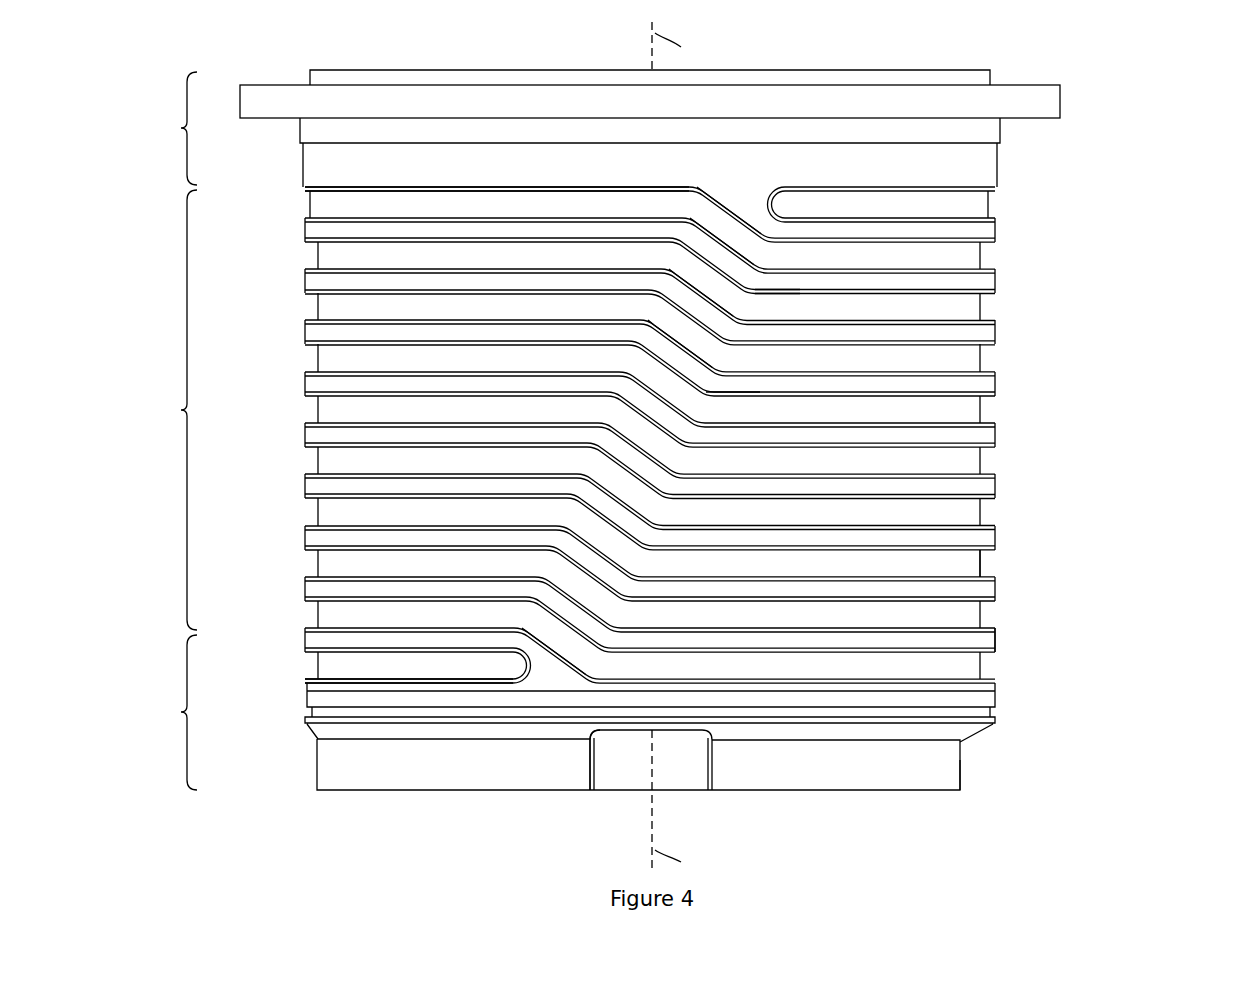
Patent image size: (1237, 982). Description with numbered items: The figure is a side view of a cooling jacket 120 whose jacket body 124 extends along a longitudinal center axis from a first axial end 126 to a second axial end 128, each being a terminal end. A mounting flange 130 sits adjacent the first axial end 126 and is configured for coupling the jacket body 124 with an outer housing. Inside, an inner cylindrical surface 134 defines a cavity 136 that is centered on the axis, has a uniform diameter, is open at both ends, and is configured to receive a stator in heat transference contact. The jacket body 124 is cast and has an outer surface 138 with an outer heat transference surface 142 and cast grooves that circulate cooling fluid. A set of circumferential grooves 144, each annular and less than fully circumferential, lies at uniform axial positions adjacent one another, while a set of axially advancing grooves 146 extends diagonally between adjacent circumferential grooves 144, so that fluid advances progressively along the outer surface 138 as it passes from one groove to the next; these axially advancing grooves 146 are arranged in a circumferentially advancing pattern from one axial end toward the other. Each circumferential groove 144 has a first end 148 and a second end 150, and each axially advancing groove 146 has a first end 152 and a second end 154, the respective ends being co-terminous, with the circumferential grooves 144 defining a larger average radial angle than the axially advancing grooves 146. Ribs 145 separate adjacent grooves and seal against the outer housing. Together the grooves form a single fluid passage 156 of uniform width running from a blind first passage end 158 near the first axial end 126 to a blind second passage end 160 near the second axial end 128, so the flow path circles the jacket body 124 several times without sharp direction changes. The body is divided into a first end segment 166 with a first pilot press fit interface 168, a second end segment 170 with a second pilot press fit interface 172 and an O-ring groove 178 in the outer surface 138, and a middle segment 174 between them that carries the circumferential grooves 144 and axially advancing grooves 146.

The cooling jacket 120 is at (1181, 222).
The jacket body 124 is at (790, 782).
The first axial end 126 is at (982, 70).
The second axial end 128 is at (930, 793).
The mounting flange 130 is at (1062, 102).
The inner cylindrical surface 134 is at (695, 773).
The cavity 136 is at (604, 741).
The outer surface 138 is at (990, 622).
The outer heat transference surface 142 is at (985, 560).
The circumferential grooves 144 is at (302, 206).
The ribs 145 is at (998, 292).
The axially advancing grooves 146 is at (739, 222).
The first end 148 is at (667, 309).
The second end 150 is at (758, 306).
The first end 152 is at (664, 343).
The second end 154 is at (719, 356).
The fluid passage 156 is at (868, 192).
The first passage end 158 is at (788, 206).
The second passage end 160 is at (527, 668).
The first end segment 166 is at (162, 128).
The first pilot press fit interface 168 is at (298, 129).
The second end segment 170 is at (162, 712).
The second pilot press fit interface 172 is at (1002, 699).
The middle segment 174 is at (162, 410).
The groove 178 is at (996, 716).